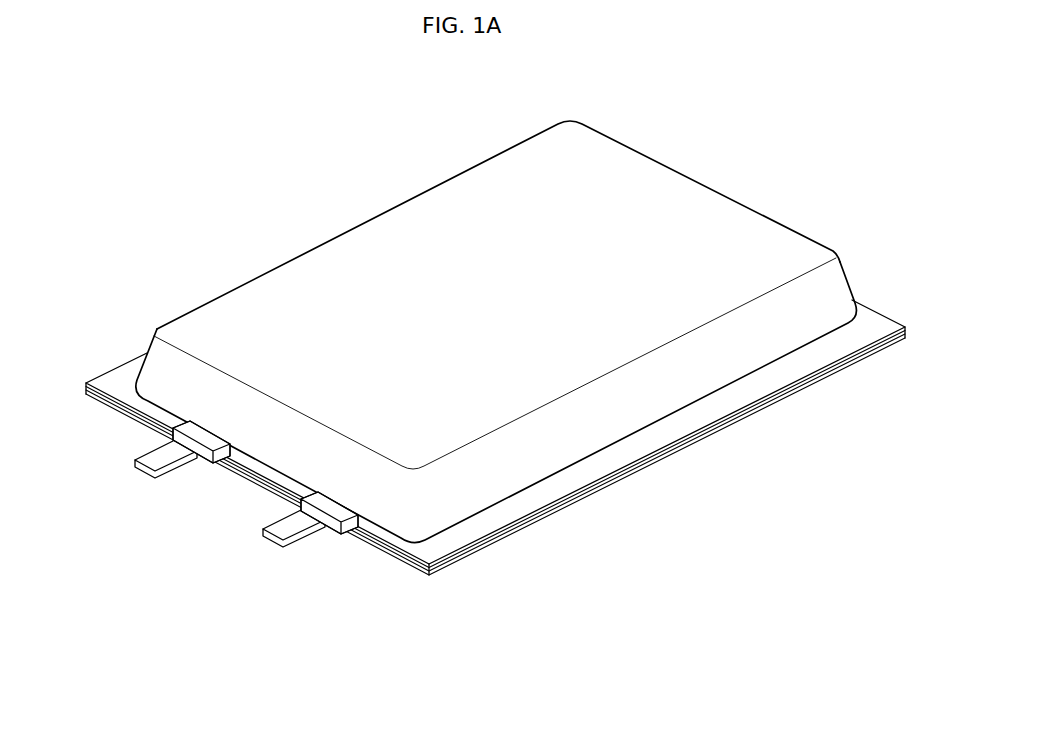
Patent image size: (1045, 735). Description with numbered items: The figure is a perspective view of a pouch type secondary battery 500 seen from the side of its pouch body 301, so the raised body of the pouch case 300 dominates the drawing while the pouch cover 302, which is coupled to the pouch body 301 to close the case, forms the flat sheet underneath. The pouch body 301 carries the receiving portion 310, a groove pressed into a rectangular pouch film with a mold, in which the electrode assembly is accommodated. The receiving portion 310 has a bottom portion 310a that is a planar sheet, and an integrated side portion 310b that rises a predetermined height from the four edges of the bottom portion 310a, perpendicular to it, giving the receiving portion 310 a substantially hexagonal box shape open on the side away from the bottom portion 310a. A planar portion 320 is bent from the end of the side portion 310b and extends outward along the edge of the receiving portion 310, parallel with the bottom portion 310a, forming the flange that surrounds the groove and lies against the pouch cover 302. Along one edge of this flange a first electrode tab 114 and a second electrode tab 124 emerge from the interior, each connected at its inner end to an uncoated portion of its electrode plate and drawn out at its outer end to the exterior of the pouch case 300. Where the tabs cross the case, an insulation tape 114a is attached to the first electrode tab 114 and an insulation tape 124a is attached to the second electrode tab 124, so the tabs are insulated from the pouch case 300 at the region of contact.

The secondary battery 500 is at (895, 77).
The pouch case 300 is at (947, 425).
The pouch body 301 is at (728, 403).
The pouch cover 302 is at (862, 372).
The receiving portion 310 is at (190, 213).
The bottom portion 310a is at (241, 297).
The side portion 310b is at (157, 373).
The planar portion 320 is at (395, 538).
The first electrode tab 114 is at (170, 437).
The insulation tape 114a is at (201, 442).
The second electrode tab 124 is at (298, 505).
The insulation tape 124a is at (329, 513).